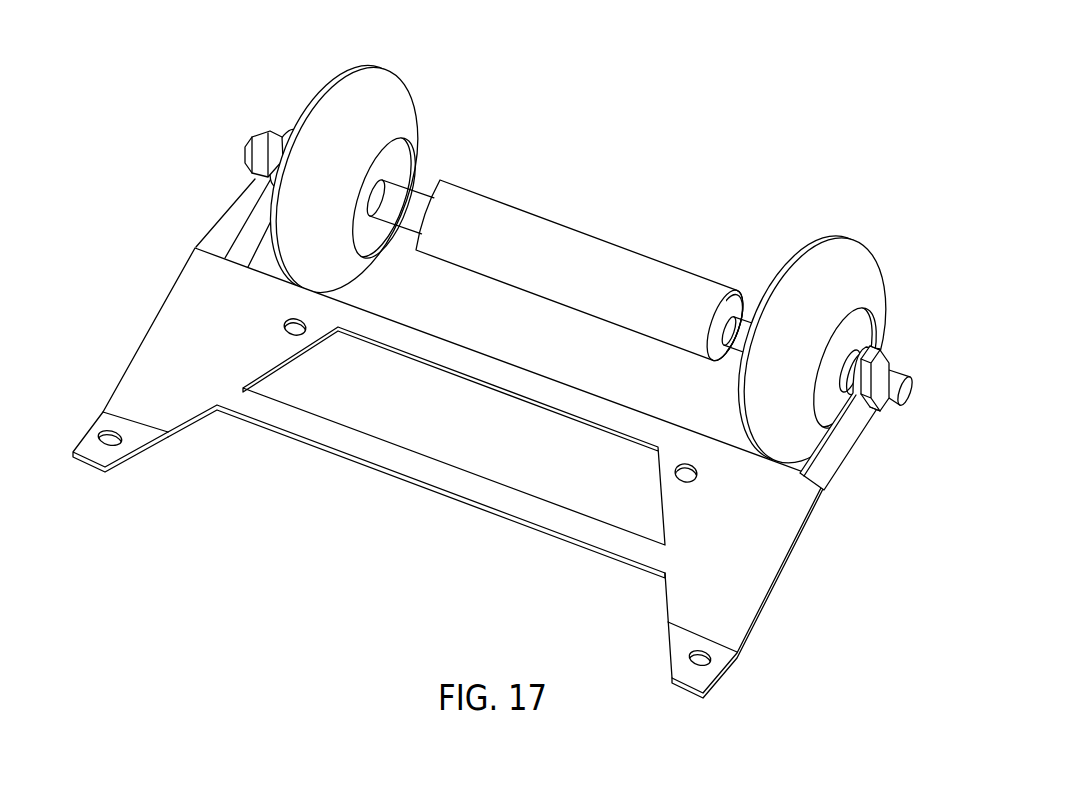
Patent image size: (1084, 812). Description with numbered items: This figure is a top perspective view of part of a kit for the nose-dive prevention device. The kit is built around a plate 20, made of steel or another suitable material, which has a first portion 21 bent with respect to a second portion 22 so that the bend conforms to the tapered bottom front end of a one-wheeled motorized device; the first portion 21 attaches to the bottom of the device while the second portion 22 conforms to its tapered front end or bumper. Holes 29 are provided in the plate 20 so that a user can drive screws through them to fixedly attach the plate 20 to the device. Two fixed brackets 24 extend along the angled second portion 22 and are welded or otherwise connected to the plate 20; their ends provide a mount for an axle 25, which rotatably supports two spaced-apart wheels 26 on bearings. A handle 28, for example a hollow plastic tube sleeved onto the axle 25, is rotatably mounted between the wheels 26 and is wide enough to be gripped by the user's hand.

The plate 20 is at (477, 488).
The first portion 21 is at (137, 442).
The second portion 22 is at (178, 407).
The fixed brackets 24 is at (852, 430).
The axle 25 is at (737, 327).
The wheels 26 is at (850, 253).
The handle 28 is at (550, 236).
The holes 29 is at (675, 474).